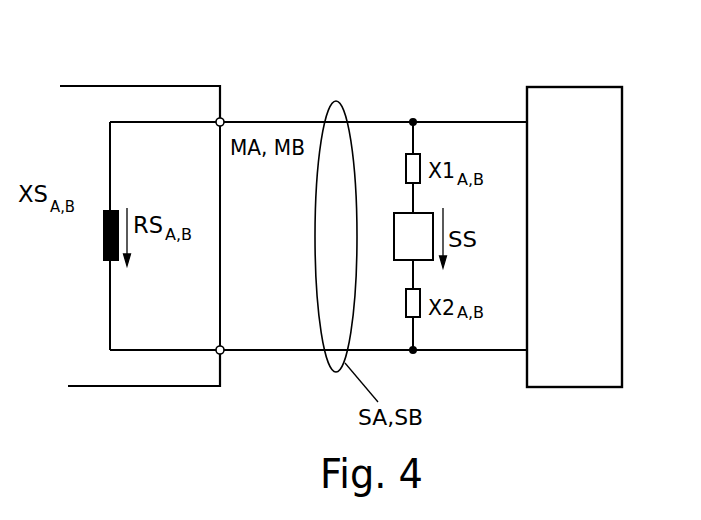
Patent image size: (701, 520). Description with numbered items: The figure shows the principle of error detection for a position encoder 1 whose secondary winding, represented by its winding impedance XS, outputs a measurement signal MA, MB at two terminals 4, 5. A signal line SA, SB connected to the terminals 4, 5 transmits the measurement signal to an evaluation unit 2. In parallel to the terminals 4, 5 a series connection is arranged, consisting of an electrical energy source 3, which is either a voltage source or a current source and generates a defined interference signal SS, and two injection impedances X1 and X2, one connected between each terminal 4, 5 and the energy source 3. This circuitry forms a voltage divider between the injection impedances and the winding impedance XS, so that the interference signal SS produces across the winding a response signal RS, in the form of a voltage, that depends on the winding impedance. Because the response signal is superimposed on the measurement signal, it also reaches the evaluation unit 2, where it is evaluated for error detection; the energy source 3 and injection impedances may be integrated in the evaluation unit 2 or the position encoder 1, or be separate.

The position encoder 1 is at (145, 84).
The evaluation unit 2 is at (583, 246).
The electrical energy source 3 is at (423, 244).
The terminal 4 is at (223, 118).
The terminal 5 is at (225, 356).